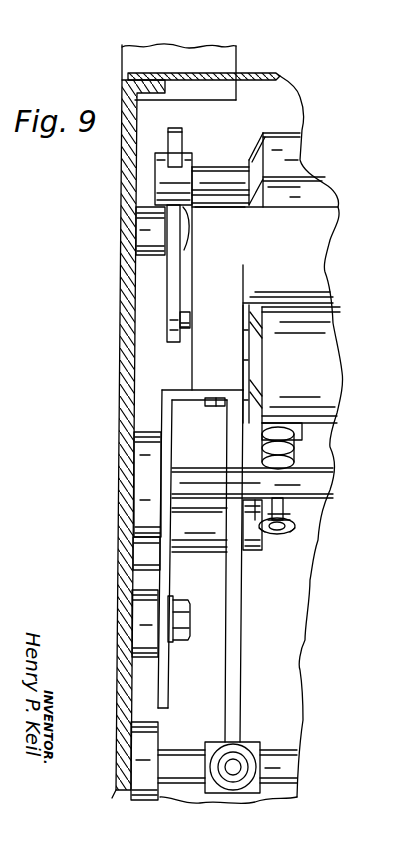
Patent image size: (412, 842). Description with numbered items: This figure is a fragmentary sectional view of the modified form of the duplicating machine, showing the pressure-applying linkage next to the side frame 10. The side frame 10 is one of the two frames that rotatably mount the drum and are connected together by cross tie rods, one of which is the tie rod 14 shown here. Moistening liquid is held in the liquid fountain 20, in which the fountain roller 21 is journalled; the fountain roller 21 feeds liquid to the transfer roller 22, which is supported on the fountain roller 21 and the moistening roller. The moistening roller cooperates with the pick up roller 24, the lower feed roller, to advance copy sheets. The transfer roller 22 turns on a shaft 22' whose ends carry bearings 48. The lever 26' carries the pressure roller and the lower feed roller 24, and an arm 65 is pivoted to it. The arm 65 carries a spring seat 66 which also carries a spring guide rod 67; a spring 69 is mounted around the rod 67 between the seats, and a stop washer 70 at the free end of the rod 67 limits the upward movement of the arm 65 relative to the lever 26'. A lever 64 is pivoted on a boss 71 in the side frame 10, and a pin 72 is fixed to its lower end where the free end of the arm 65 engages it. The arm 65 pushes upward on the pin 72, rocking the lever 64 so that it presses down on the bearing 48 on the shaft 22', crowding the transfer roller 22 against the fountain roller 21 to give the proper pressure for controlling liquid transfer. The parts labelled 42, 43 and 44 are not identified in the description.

The side frame 10 is at (125, 387).
The cross tie rod 14 is at (322, 488).
The liquid fountain 20 is at (294, 271).
The fountain roller 21 is at (291, 199).
The transfer roller 22 is at (274, 157).
The shaft of the transfer roller 22' is at (220, 171).
The pick up roller 24 is at (308, 373).
The lever 26' is at (251, 566).
The lower bar 42 is at (292, 768).
The pivot block 43 is at (258, 742).
The pivot pin 44 is at (229, 756).
The bearing 48 is at (160, 175).
The lever 64 is at (170, 282).
The arm 65 is at (247, 448).
The spring seat 66 is at (293, 431).
The spring guide rod 67 is at (298, 514).
The spring 69 is at (298, 458).
The stop washer 70 is at (290, 535).
The boss 71 is at (152, 223).
The pin 72 is at (185, 336).